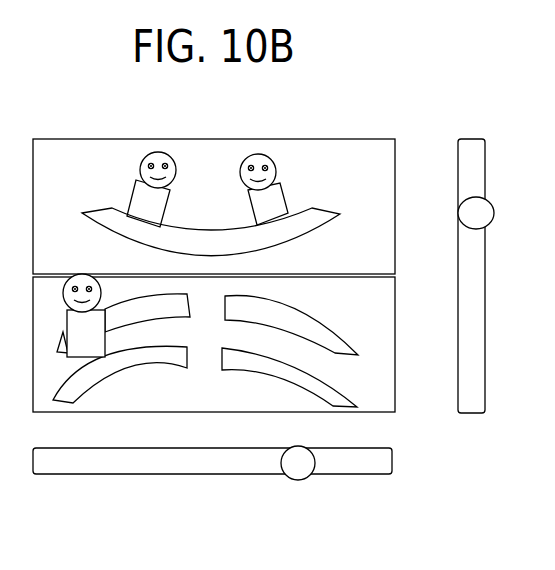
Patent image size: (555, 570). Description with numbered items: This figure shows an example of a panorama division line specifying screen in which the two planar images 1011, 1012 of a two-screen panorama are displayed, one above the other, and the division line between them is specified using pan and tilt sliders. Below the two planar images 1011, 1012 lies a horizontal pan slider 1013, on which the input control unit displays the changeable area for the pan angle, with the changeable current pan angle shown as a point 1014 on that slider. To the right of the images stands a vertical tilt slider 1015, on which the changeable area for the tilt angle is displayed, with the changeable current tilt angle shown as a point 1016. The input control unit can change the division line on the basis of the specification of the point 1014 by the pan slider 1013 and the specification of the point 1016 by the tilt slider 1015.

The planar image 1011 is at (370, 160).
The planar image 1012 is at (382, 394).
The pan slider 1013 is at (367, 458).
The point 1014 is at (303, 468).
The tilt slider 1015 is at (470, 148).
The point 1016 is at (485, 215).